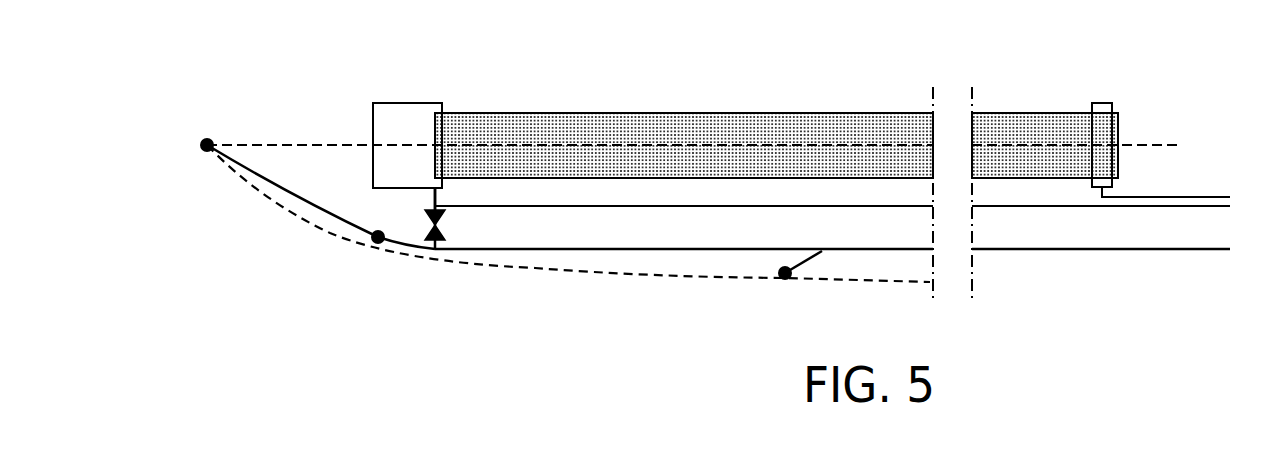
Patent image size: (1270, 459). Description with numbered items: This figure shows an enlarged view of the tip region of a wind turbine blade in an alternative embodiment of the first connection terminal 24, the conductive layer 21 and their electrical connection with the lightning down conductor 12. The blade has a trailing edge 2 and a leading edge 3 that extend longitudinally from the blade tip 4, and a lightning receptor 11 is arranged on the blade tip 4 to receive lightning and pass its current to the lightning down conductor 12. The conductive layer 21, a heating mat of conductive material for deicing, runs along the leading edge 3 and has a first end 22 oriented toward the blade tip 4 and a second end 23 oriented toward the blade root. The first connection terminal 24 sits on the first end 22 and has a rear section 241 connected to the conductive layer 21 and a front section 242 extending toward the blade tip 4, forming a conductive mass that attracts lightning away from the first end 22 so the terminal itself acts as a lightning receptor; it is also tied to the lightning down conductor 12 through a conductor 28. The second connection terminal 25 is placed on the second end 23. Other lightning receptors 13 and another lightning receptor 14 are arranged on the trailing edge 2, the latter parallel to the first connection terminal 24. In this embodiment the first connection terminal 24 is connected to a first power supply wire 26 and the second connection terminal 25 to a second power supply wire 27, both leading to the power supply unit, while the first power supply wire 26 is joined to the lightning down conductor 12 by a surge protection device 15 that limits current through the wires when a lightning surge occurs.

The trailing edge 2 is at (535, 268).
The leading edge 3 is at (280, 145).
The blade tip 4 is at (210, 153).
The lightning receptor 11 is at (198, 150).
The lightning down conductor 12 is at (657, 252).
The other lightning receptors 13 is at (780, 282).
The another lightning receptor 14 is at (373, 248).
The surge protection device 15 is at (428, 242).
The conductive layer 21 is at (665, 128).
The first end 22 is at (433, 157).
The second end 23 is at (1120, 133).
The first connection terminal 24 is at (403, 113).
The second connection terminal 25 is at (1097, 112).
The first power supply wire 26 is at (735, 207).
The second power supply wire 27 is at (1180, 200).
The conductor 28 is at (433, 198).
The rear section 241 is at (442, 140).
The front section 242 is at (395, 133).